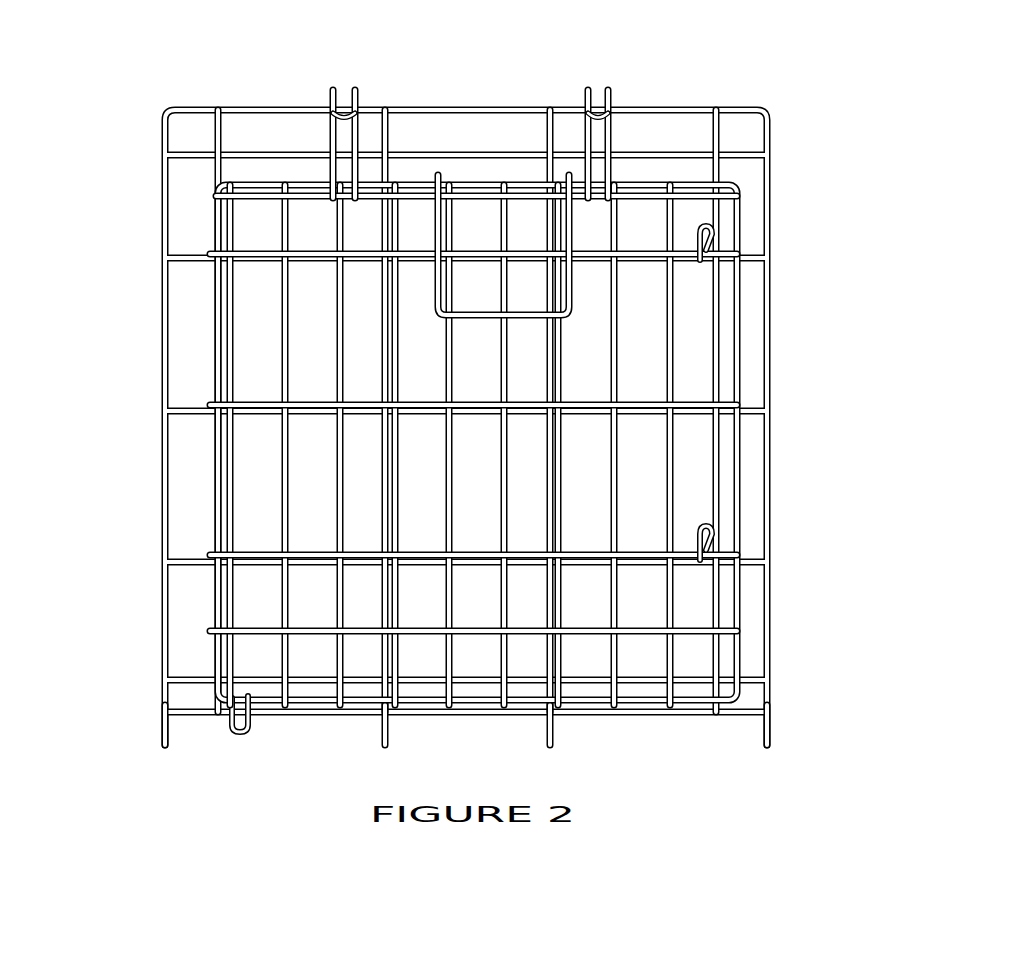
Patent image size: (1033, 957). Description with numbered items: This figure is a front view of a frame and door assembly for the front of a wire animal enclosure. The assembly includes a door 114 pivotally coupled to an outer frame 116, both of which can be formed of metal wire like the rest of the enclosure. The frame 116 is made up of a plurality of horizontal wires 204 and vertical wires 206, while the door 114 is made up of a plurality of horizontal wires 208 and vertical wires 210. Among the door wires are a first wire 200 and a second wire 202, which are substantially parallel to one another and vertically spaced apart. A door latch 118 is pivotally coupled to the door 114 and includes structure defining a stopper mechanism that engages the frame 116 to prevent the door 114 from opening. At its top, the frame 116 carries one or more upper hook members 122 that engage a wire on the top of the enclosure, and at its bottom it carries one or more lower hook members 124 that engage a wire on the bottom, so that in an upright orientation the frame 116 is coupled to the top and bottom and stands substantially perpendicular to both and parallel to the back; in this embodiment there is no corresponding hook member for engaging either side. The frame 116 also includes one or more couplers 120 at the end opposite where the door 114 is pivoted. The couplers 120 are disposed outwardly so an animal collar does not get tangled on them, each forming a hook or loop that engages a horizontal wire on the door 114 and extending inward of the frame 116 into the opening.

The door 114 is at (465, 456).
The outer frame 116 is at (489, 412).
The door latch 118 is at (440, 222).
The coupler 120 is at (714, 230).
The upper hook member 122 is at (610, 92).
The lower hook member 124 is at (765, 730).
The first wire 200 is at (645, 253).
The second wire 202 is at (650, 555).
The horizontal wires 204 is at (750, 194).
The vertical wires 206 is at (215, 135).
The horizontal wires 208 is at (260, 548).
The vertical wires 210 is at (285, 335).